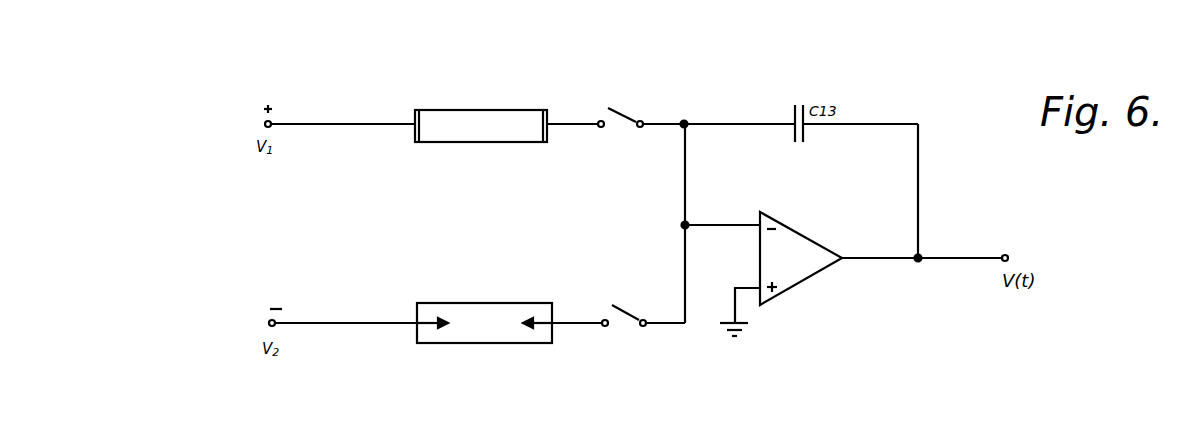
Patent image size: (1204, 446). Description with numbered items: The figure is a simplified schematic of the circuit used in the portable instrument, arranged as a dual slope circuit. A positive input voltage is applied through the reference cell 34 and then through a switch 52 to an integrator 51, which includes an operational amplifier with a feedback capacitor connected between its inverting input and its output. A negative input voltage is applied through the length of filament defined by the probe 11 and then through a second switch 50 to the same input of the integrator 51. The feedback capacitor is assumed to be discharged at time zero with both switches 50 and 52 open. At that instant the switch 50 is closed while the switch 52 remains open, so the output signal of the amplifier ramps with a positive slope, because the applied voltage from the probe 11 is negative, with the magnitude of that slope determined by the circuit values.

The reference cell 34 is at (497, 108).
The switch 52 is at (625, 113).
The integrator 51 is at (805, 287).
The probe 11 is at (498, 296).
The switch 50 is at (618, 311).